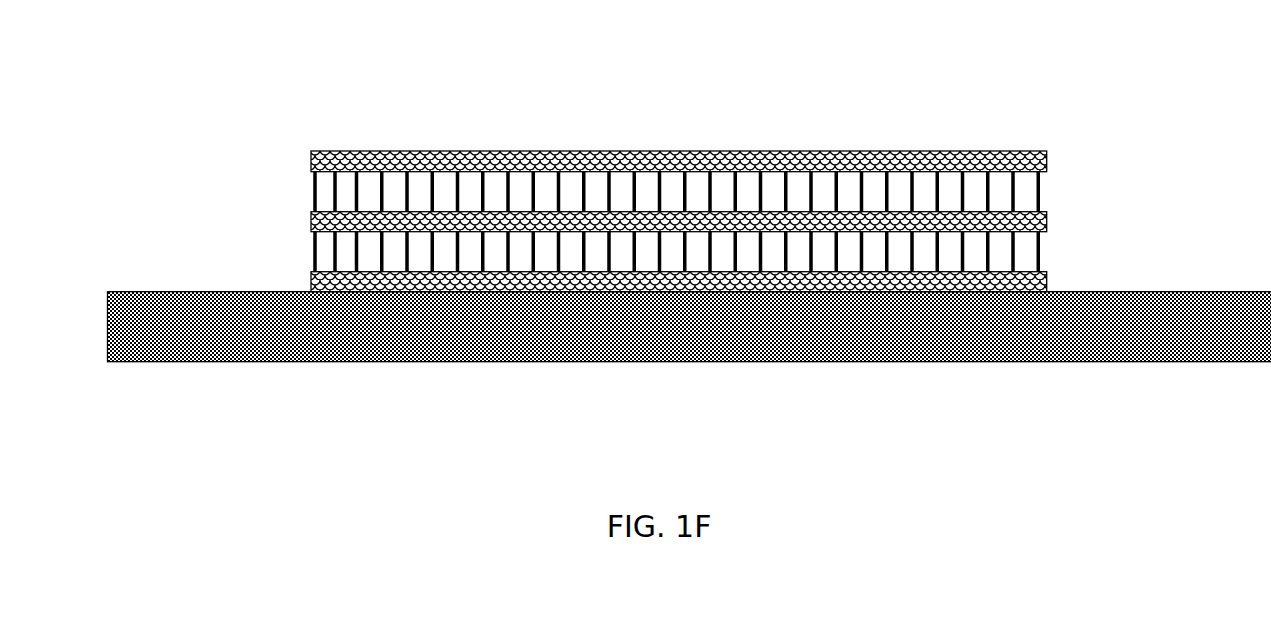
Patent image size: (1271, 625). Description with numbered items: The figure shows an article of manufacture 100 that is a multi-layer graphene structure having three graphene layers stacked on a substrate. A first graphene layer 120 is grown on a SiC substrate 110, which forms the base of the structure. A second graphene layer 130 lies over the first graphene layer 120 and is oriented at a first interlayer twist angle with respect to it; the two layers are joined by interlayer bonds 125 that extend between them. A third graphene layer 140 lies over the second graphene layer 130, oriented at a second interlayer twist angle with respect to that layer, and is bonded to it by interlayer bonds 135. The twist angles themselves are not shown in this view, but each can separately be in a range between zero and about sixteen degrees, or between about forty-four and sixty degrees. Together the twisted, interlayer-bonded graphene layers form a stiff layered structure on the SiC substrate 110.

The article of manufacture 100 is at (227, 122).
The SiC substrate 110 is at (217, 292).
The first graphene layer 120 is at (1047, 278).
The interlayer bonds 125 is at (1047, 247).
The second graphene layer 130 is at (1047, 215).
The interlayer bonds 135 is at (1047, 187).
The third graphene layer 140 is at (1047, 157).